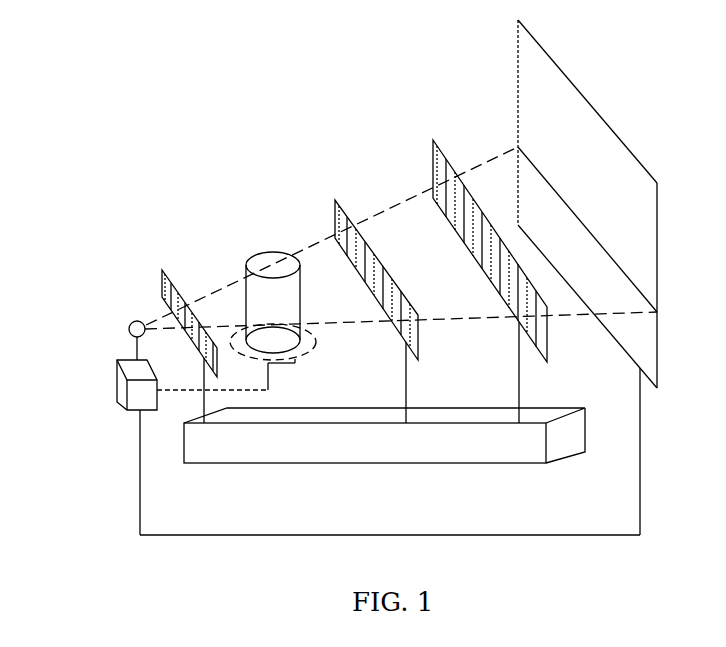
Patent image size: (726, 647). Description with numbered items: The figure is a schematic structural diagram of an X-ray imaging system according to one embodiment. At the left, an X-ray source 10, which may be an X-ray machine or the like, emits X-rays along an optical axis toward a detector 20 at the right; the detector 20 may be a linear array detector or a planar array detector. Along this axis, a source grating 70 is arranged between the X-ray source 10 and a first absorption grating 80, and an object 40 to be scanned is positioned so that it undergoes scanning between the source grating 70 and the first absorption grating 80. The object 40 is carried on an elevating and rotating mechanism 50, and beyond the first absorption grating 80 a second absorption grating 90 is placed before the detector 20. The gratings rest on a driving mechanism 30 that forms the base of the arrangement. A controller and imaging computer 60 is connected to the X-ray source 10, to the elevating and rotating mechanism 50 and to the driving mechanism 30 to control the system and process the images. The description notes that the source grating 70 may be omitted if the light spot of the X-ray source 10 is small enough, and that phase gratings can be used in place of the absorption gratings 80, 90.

The X-ray source 10 is at (128, 329).
The detector 20 is at (559, 65).
The driving mechanism 30 is at (520, 465).
The object to be scanned 40 is at (262, 252).
The elevating and rotating mechanism 50 is at (292, 364).
The controller and imaging computer 60 is at (117, 378).
The source grating 70 is at (163, 282).
The first absorption grating 80 is at (335, 200).
The second absorption grating 90 is at (433, 140).